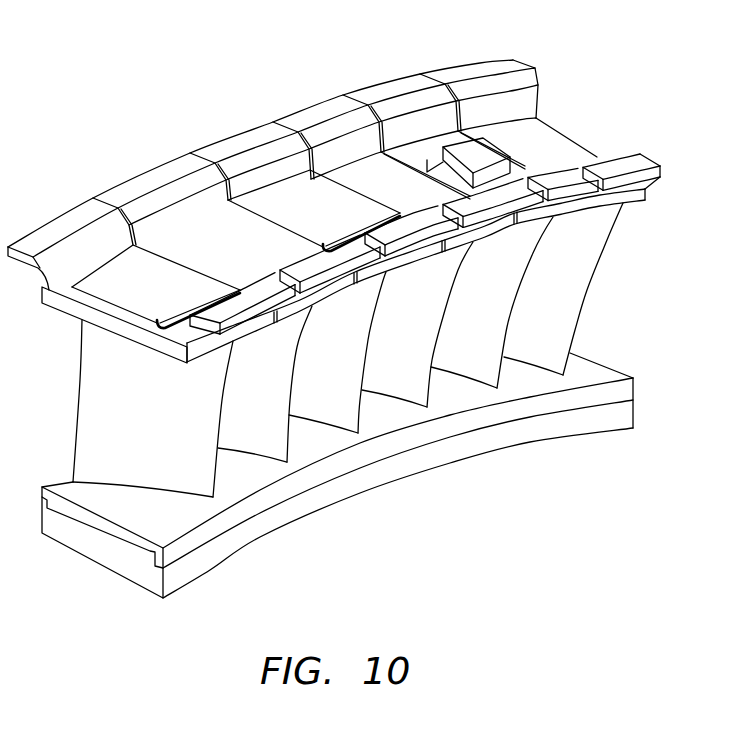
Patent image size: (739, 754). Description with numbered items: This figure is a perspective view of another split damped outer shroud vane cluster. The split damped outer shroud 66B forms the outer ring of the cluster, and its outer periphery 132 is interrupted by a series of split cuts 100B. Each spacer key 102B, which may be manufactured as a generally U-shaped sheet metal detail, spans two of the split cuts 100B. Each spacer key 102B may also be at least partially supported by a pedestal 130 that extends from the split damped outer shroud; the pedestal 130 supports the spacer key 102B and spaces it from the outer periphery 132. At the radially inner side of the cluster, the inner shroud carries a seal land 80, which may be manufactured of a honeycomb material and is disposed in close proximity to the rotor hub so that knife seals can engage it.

The split damped outer shroud 66B is at (354, 186).
The split cut 100B is at (350, 97).
The spacer key 102B is at (290, 200).
The pedestal 130 is at (477, 147).
The outer periphery 132 is at (533, 147).
The seal land 80 is at (383, 472).